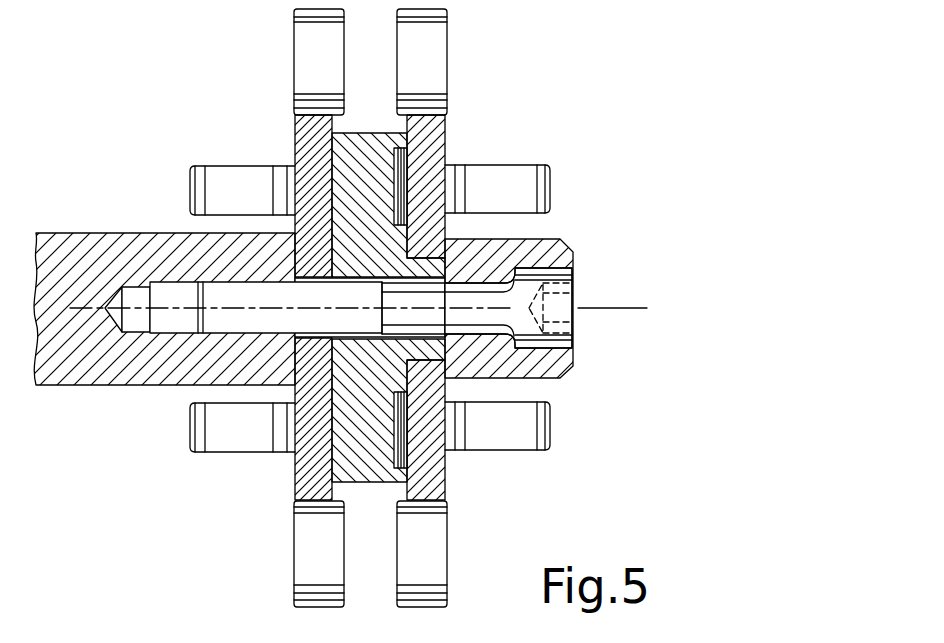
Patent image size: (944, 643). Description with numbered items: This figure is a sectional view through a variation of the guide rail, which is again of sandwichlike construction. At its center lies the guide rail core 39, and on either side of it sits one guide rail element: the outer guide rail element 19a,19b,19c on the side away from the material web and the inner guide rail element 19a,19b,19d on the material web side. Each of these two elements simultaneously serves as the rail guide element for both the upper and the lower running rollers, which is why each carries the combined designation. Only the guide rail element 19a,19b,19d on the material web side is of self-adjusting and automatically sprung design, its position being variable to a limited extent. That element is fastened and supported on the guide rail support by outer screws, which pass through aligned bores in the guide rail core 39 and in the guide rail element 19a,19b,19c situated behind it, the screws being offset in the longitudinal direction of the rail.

The outer guide rail element 19a,19b,19c is at (295, 127).
The inner guide rail element 19a,19b,19d is at (445, 153).
The guide rail core 39 is at (385, 133).